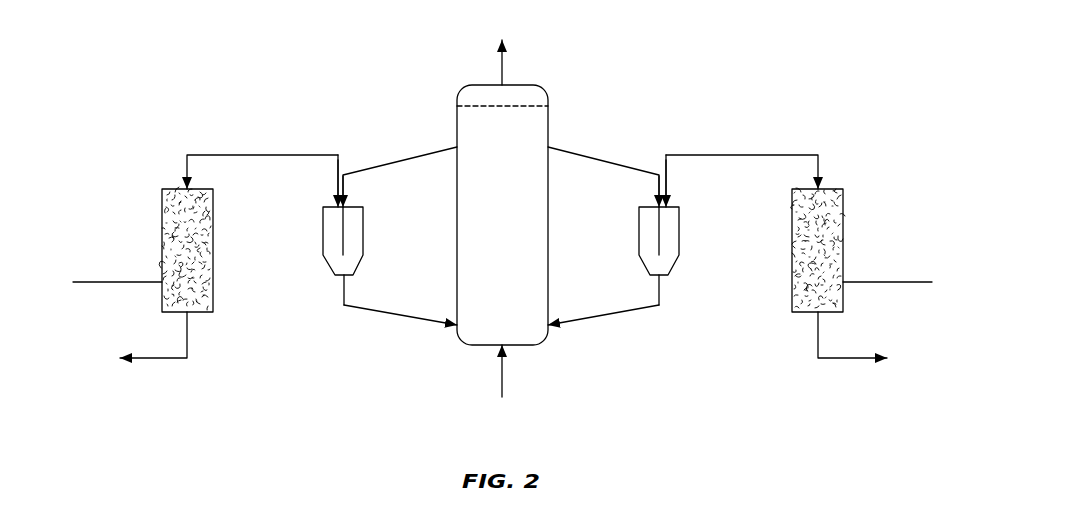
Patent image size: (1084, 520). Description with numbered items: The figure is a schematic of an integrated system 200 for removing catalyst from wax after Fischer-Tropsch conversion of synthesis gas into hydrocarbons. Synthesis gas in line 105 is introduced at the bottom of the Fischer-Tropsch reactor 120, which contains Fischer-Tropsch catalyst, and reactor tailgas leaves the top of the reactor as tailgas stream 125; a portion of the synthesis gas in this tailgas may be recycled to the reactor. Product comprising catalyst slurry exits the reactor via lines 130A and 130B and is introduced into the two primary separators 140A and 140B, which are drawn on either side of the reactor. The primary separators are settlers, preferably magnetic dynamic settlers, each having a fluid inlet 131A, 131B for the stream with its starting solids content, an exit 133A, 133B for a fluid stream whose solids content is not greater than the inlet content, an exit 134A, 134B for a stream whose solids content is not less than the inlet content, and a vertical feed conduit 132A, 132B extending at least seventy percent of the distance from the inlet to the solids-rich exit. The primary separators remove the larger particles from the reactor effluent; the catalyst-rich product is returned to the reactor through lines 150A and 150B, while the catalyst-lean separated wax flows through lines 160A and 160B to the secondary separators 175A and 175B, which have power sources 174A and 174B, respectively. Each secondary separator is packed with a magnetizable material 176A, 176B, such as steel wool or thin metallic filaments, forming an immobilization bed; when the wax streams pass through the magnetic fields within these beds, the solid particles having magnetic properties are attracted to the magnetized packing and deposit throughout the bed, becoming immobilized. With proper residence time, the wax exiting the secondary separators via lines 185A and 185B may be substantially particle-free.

The integrated system 200 is at (385, 50).
The synthesis gas line 105 is at (503, 378).
The Fischer-Tropsch reactor 120 is at (522, 227).
The tailgas stream 125 is at (503, 62).
The reactor outlet line 130A is at (577, 150).
The reactor outlet line 130B is at (430, 150).
The fluid inlet 131A is at (655, 206).
The fluid inlet 131B is at (350, 206).
The vertical feed conduit 132A is at (663, 225).
The vertical feed conduit 132B is at (342, 225).
The exit for solids-lean fluid stream 133A is at (669, 205).
The exit for solids-lean fluid stream 133B is at (336, 205).
The exit for solids-rich fluid stream 134A is at (658, 277).
The exit for solids-rich fluid stream 134B is at (347, 277).
The primary separator 140A is at (677, 272).
The primary separator 140B is at (328, 272).
The catalyst-rich product line 150A is at (609, 318).
The catalyst-rich product line 150B is at (406, 318).
The catalyst-lean product line 160A is at (742, 154).
The catalyst-lean product line 160B is at (263, 154).
The power source 174A is at (887, 282).
The power source 174B is at (118, 282).
The secondary separator 175A is at (843, 196).
The secondary separator 175B is at (162, 196).
The magnetizable material 176A is at (812, 300).
The magnetizable material 176B is at (180, 300).
The catalyst-free hydrocarbon product line 185A is at (848, 360).
The catalyst-free hydrocarbon product line 185B is at (152, 360).